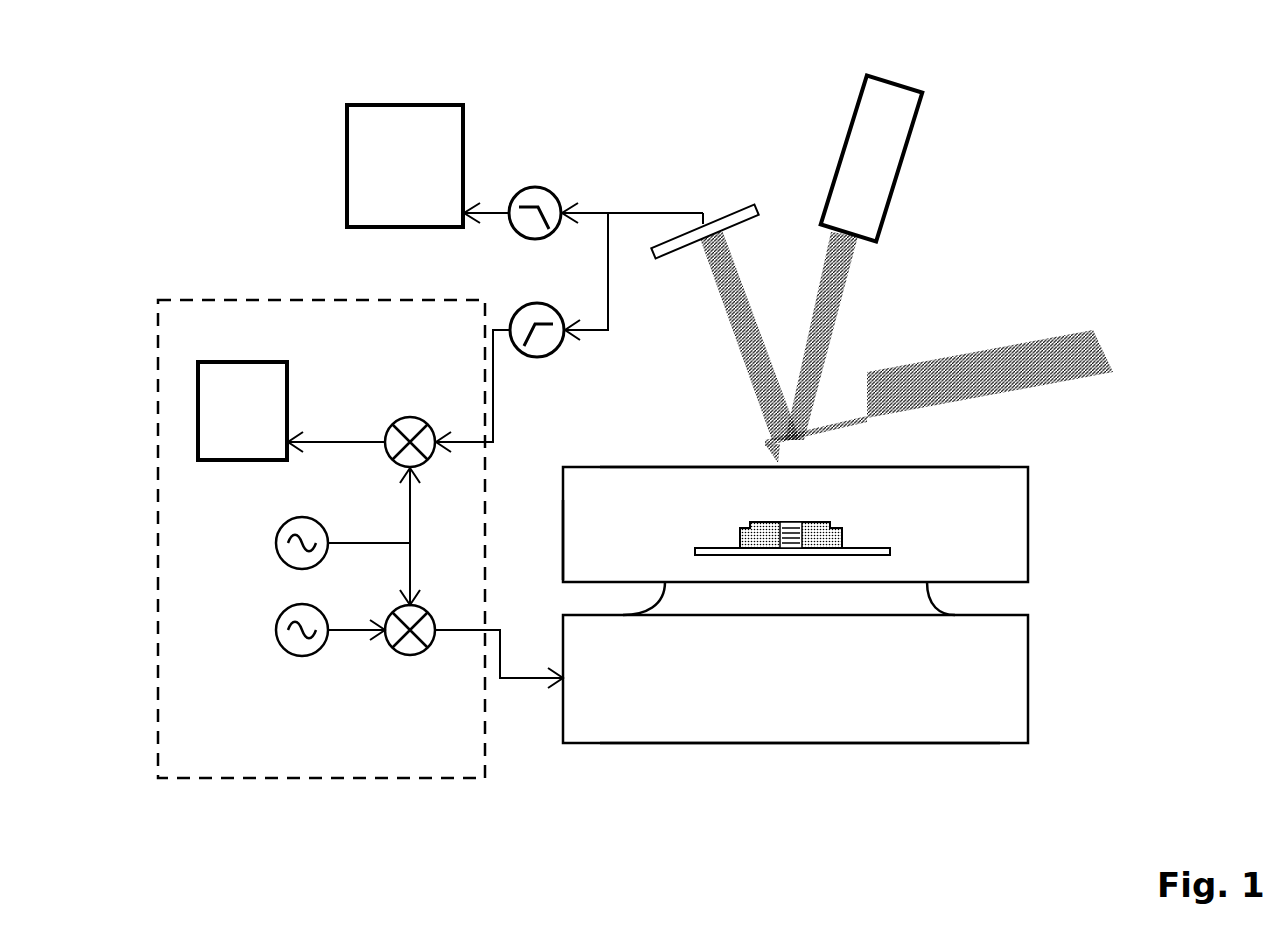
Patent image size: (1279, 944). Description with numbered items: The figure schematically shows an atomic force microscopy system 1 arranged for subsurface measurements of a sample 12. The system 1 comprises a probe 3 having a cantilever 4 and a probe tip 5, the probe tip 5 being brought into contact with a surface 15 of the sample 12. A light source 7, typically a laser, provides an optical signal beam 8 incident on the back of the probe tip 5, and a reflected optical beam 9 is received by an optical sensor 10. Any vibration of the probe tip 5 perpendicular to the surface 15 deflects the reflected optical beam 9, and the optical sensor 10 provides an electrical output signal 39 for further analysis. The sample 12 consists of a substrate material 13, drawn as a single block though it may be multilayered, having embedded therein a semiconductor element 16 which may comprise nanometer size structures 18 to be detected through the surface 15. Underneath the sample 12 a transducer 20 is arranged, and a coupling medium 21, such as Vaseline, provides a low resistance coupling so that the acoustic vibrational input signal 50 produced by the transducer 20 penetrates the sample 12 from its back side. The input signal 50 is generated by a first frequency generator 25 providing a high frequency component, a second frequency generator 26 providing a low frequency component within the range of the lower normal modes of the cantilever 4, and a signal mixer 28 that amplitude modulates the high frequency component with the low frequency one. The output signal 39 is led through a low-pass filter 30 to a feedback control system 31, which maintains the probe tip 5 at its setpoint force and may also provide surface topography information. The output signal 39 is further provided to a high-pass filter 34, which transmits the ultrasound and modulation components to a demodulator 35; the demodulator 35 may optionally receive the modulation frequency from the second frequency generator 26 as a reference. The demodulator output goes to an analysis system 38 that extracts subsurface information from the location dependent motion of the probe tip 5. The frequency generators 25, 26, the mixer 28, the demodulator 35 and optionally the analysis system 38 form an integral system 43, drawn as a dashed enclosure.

The atomic force microscopy system 1 is at (1143, 191).
The probe 3 is at (1040, 345).
The cantilever 4 is at (833, 425).
The probe tip 5 is at (765, 453).
The light source 7 is at (903, 150).
The optical signal beam 8 is at (843, 292).
The reflected optical beam 9 is at (722, 300).
The optical sensor 10 is at (718, 207).
The sample 12 is at (563, 541).
The substrate material 13 is at (1028, 560).
The surface 15 is at (652, 467).
The semiconductor element 16 is at (842, 528).
The nanometer size structures 18 is at (782, 522).
The transducer 20 is at (868, 745).
The coupling medium 21 is at (905, 600).
The first frequency generator 25 is at (302, 657).
The second frequency generator 26 is at (293, 520).
The signal mixer 28 is at (390, 650).
The low-pass filter 30 is at (562, 205).
The feedback control system 31 is at (385, 105).
The high-pass filter 34 is at (540, 357).
The demodulator 35 is at (435, 458).
The analysis system 38 is at (237, 362).
The output signal 39 is at (660, 212).
The integral system 43 is at (300, 300).
The acoustic vibrational input signal 50 is at (540, 682).